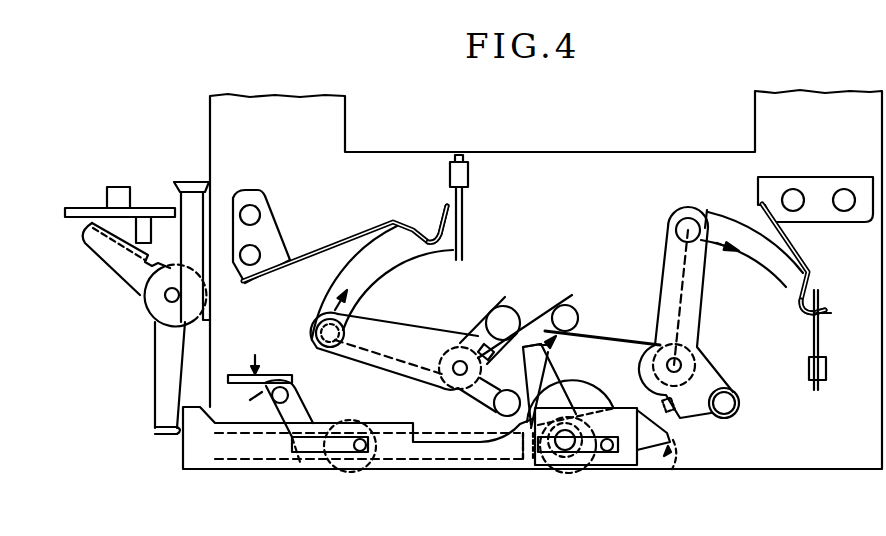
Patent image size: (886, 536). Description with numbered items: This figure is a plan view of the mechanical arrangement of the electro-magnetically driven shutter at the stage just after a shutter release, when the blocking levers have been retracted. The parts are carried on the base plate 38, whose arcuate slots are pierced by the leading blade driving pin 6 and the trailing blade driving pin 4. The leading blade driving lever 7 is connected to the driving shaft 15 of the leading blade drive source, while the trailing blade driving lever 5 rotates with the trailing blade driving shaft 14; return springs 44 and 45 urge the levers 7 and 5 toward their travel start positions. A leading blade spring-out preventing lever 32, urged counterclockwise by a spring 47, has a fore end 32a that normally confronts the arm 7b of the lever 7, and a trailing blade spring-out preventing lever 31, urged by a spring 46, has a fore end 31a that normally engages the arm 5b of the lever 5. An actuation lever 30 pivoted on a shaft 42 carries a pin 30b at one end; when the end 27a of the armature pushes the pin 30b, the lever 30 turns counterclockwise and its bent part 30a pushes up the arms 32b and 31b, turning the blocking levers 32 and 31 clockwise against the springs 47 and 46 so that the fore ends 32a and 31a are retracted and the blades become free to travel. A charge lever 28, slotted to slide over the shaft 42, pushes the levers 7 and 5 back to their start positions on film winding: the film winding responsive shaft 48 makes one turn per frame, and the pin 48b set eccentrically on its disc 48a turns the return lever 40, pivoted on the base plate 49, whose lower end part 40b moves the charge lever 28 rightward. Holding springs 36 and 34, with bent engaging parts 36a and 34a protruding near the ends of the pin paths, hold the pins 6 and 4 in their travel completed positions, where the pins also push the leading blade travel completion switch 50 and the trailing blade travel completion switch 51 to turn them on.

The trailing blade driving pin 4 is at (330, 318).
The trailing blade driving lever 5 is at (495, 312).
The arm of trailing blade driving lever 5b is at (492, 403).
The leading blade driving pin 6 is at (688, 216).
The leading blade driving lever 7 is at (667, 250).
The arm of leading blade driving lever 7b is at (684, 418).
The trailing blade driving shaft 14 is at (456, 358).
The driving shaft of leading blade drive source 15 is at (690, 361).
The end of armature 27a is at (250, 400).
The charge lever 28 is at (195, 460).
The actuation lever 30 is at (302, 410).
The bent part of actuation lever 30a is at (527, 456).
The pin 30b is at (281, 384).
The trailing blade spring-out preventing lever 31 is at (562, 401).
The fore end of blocking lever 31a is at (542, 354).
The arm of blocking lever 31b is at (567, 462).
The leading blade spring-out preventing lever 32 is at (645, 410).
The fore end of blocking lever 32a is at (672, 456).
The arm of blocking lever 32b is at (539, 462).
The holding spring 34 is at (300, 252).
The bent engaging part 34a is at (425, 232).
The holding spring 36 is at (800, 241).
The bent engaging part 36a is at (828, 305).
The base plate 38 is at (806, 97).
The return lever 40 is at (102, 262).
The lower end part of return lever 40b is at (170, 434).
The shaft 42 is at (360, 439).
The return spring 44 is at (616, 330).
The return spring 45 is at (530, 306).
The spring 46 is at (546, 360).
The spring 47 is at (600, 460).
The film winding responsive shaft 48 is at (119, 187).
The disc 48a is at (89, 207).
The pin 48b is at (145, 222).
The base plate 49 is at (191, 187).
The leading blade travel completion switch 50 is at (828, 368).
The trailing blade travel completion switch 51 is at (470, 173).